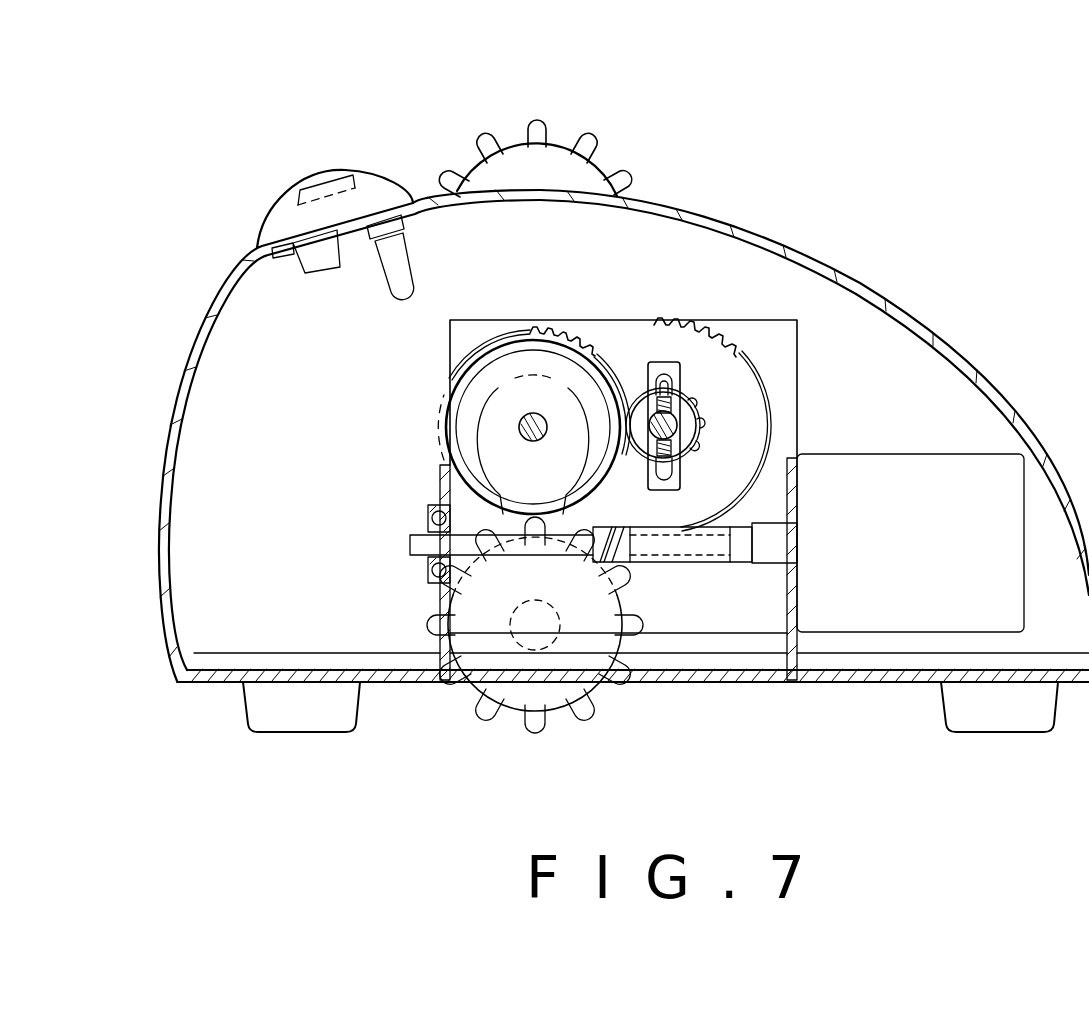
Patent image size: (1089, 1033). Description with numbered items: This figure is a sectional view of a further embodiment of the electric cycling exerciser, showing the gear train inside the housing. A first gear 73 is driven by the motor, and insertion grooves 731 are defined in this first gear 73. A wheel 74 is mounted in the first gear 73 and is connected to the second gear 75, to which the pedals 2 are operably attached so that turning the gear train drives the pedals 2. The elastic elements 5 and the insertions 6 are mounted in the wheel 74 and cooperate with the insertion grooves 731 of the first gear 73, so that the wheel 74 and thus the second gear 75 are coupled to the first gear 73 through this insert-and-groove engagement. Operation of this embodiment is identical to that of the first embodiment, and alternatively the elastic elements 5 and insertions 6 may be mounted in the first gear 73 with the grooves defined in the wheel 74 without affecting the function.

The pedals 2 is at (463, 172).
The second gear 75 is at (560, 365).
The insertion grooves 731 is at (662, 380).
The insertions 6 is at (678, 390).
The elastic elements 5 is at (692, 383).
The first gear 73 is at (738, 405).
The wheel 74 is at (683, 433).